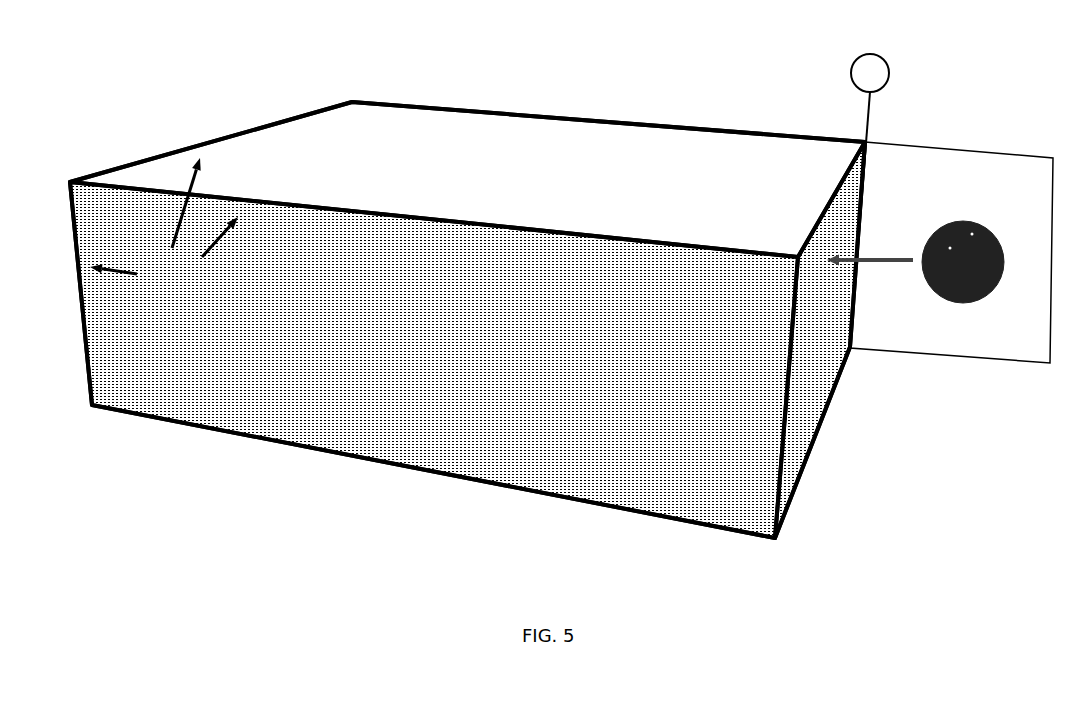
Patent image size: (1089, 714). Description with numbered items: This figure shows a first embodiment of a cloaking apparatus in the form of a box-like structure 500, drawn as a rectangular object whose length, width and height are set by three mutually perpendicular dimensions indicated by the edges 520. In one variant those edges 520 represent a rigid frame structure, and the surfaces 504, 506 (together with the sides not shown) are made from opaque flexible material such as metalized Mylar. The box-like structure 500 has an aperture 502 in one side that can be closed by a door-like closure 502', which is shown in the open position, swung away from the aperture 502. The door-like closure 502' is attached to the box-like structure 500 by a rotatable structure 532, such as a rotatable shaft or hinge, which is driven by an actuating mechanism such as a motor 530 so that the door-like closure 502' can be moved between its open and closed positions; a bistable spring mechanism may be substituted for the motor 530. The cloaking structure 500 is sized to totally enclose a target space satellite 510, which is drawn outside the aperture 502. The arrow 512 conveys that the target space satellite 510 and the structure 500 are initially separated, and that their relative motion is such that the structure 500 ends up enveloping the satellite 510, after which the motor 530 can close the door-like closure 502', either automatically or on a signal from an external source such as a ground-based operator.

The box-like structure 500 is at (228, 468).
The aperture 502 is at (853, 340).
The door-like closure 502' is at (951, 219).
The surface 504 is at (434, 360).
The surface 506 is at (467, 179).
The target space satellite 510 is at (940, 214).
The arrow 512 is at (870, 283).
The edges 520 is at (164, 222).
The motor 530 is at (834, 64).
The rotatable structure 532 is at (845, 105).